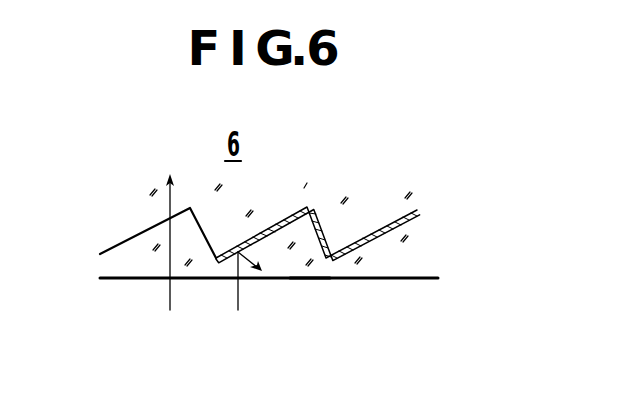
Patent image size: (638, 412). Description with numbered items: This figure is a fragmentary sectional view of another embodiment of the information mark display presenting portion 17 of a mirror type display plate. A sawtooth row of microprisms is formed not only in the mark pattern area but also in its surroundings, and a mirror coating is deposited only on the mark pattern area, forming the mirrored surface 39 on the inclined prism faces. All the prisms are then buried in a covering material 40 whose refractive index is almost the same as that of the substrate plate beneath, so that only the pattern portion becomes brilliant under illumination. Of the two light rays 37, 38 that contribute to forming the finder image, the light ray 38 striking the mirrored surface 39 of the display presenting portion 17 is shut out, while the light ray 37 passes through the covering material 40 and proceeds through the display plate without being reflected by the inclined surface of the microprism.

The information mark display presenting portion 17 is at (277, 287).
The light ray 37 is at (166, 260).
The light ray 38 is at (242, 299).
The mirrored surface 39 is at (288, 207).
The material 40 is at (302, 272).